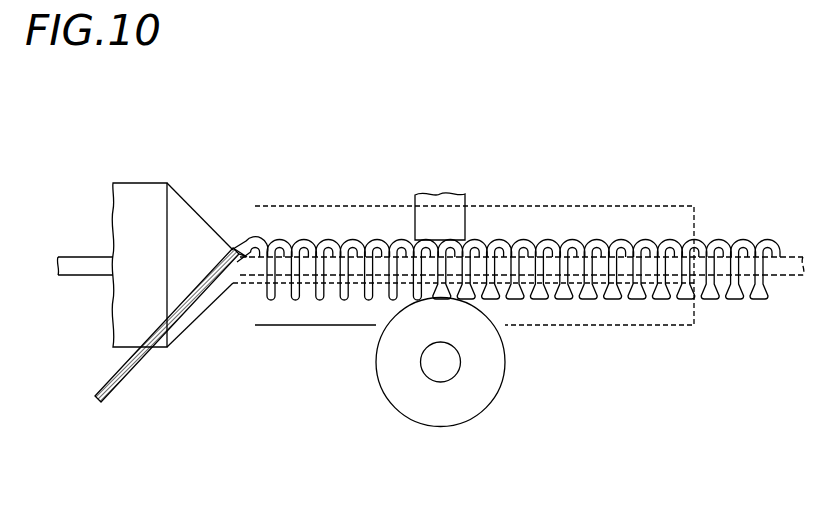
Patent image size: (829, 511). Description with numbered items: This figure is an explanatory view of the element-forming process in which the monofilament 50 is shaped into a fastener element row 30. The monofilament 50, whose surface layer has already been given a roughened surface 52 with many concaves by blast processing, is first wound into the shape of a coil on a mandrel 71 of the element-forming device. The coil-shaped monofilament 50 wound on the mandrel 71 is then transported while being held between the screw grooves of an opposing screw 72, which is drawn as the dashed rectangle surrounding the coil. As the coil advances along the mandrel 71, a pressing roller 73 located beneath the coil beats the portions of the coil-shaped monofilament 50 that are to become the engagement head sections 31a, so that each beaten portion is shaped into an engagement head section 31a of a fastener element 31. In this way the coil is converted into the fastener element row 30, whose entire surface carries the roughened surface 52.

The fastener element row 30 is at (506, 266).
The fastener element 31 is at (572, 247).
The engagement head section 31a is at (610, 299).
The monofilament 50 is at (118, 372).
The roughened surface 52 is at (713, 250).
The mandrel 71 is at (782, 268).
The opposing screw 72 is at (308, 228).
The pressing roller 73 is at (443, 407).